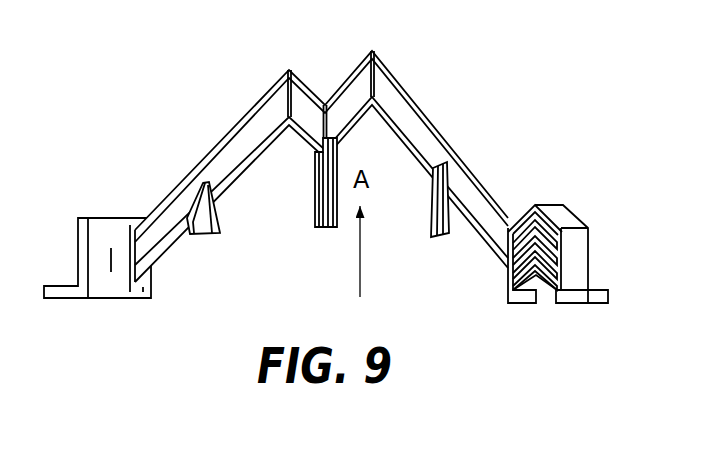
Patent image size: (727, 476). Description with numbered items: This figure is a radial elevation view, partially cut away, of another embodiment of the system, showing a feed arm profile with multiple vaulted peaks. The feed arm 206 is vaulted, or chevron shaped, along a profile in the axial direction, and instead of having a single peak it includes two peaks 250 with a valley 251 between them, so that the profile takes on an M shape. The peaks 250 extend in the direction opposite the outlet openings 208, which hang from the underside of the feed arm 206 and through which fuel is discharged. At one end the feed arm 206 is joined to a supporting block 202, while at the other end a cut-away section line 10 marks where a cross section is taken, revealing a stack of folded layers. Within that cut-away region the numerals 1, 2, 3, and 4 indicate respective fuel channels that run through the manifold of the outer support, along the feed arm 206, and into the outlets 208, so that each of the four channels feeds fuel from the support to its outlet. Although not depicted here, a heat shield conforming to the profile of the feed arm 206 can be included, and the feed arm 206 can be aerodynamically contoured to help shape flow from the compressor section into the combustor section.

The end block 202 is at (110, 238).
The peaks 250 is at (289, 68).
The valley 251 is at (323, 85).
The feed arm 206 is at (248, 152).
The outlet openings 208 is at (218, 243).
The fuel channel 1 is at (541, 205).
The fuel channel 2 is at (552, 240).
The fuel channel 3 is at (562, 258).
The fuel channel 4 is at (566, 281).
The section line 10- 10 is at (507, 192).